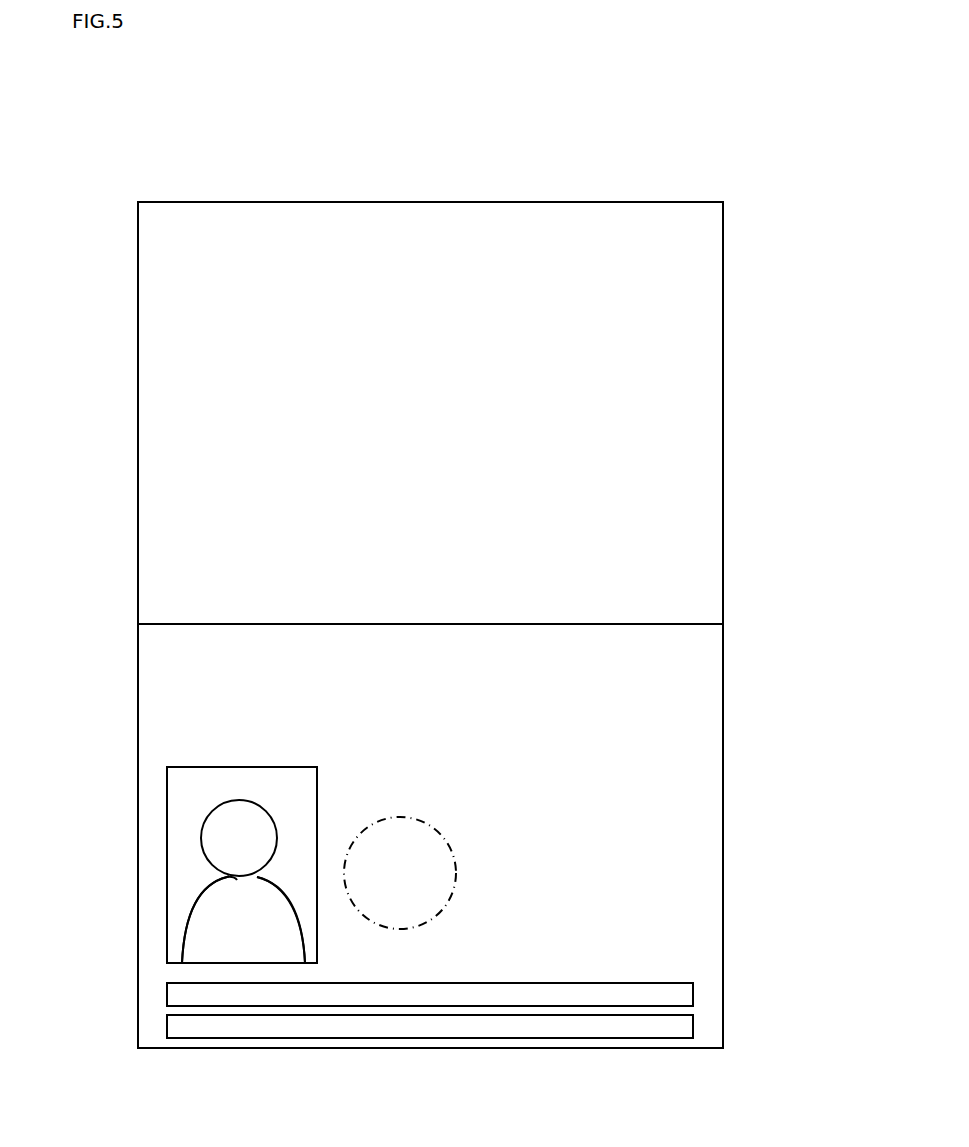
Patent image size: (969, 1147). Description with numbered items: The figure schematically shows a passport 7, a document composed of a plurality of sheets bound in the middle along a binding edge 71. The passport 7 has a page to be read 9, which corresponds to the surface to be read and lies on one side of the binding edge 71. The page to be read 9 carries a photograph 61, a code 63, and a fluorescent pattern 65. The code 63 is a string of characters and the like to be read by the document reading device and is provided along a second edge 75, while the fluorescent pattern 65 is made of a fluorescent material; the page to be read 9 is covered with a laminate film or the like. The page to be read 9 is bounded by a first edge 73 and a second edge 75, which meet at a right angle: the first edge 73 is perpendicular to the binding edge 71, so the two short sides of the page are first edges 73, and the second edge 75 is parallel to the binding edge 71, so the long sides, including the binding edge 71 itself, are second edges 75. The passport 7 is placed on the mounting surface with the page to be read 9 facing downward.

The passport 7 is at (620, 153).
The binding edge 71 is at (170, 622).
The first edge 73 is at (138, 722).
The second edge 75 is at (430, 624).
The page to be read 9 is at (694, 836).
The photograph 61 is at (182, 868).
The code 63 is at (167, 1022).
The fluorescent pattern 65 is at (400, 816).